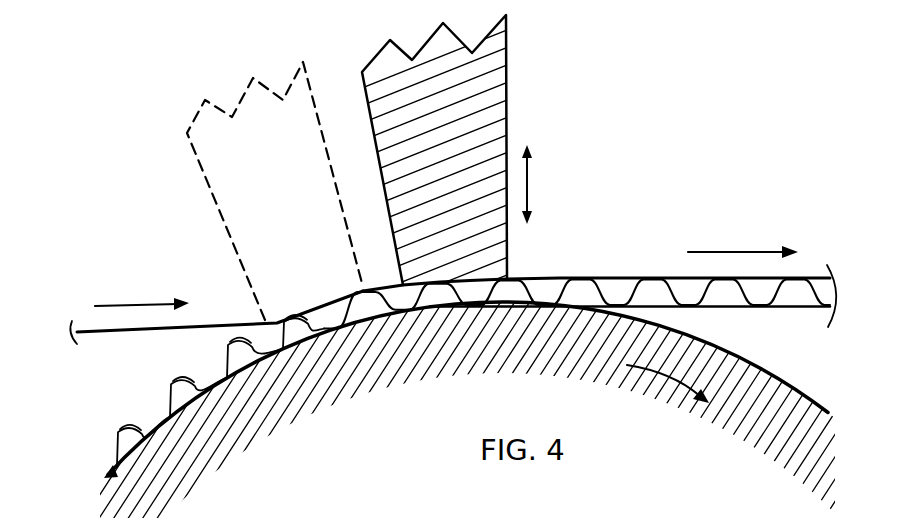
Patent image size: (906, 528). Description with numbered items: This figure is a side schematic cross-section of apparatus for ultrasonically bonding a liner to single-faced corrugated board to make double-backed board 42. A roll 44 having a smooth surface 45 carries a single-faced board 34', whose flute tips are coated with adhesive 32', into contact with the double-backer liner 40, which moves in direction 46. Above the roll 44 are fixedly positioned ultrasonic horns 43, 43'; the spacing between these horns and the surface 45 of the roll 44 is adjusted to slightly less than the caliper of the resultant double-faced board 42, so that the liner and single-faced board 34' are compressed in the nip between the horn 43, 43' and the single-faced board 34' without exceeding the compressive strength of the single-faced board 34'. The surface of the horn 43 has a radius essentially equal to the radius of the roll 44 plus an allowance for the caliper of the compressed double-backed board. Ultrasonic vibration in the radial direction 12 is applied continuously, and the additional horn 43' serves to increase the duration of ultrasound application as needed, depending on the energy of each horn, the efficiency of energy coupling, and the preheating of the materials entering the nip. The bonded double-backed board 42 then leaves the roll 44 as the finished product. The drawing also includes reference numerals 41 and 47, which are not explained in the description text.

The radial direction 12 is at (529, 189).
The adhesive 32' is at (213, 372).
The single-faced board 34' is at (216, 391).
The double-backer liner 40 is at (232, 323).
The single-faced corrugated board 41 is at (650, 277).
The double-backed corrugated board 42 is at (568, 270).
The horn 43 is at (432, 194).
The additional horn 43' is at (275, 191).
The roll 44 is at (463, 379).
The smooth surface 45 is at (750, 367).
The direction of liner movement 46 is at (157, 303).
The board exit direction 47 is at (735, 252).